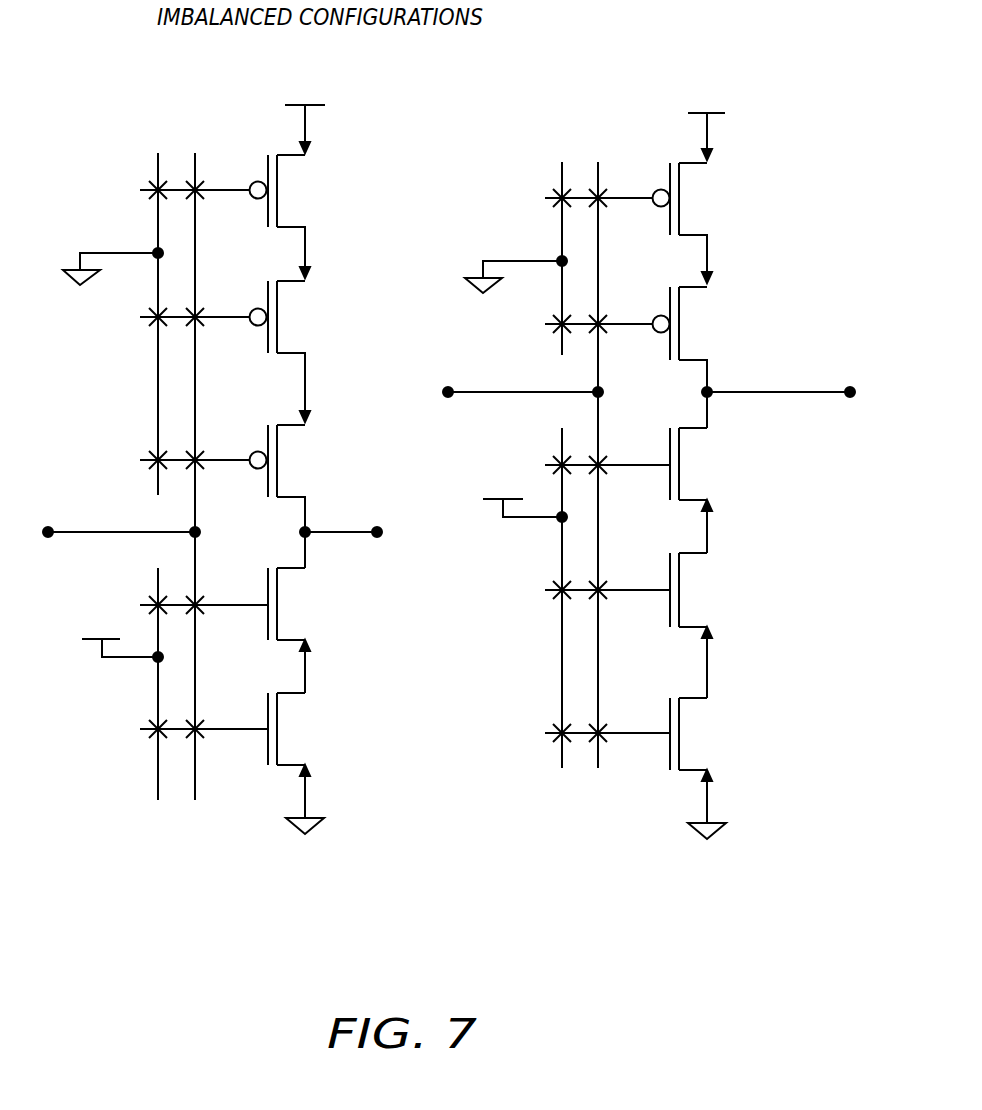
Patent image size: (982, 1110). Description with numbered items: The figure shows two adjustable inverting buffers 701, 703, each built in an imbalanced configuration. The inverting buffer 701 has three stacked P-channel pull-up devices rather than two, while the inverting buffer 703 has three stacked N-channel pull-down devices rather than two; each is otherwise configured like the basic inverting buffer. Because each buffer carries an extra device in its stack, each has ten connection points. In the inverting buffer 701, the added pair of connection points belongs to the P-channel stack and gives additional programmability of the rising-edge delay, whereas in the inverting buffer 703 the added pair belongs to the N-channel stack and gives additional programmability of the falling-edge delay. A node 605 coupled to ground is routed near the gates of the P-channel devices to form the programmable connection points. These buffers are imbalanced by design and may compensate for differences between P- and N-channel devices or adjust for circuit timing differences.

The adjustable inverting buffer 701 is at (355, 148).
The adjustable inverting buffer 703 is at (774, 137).
The node 605 is at (562, 242).